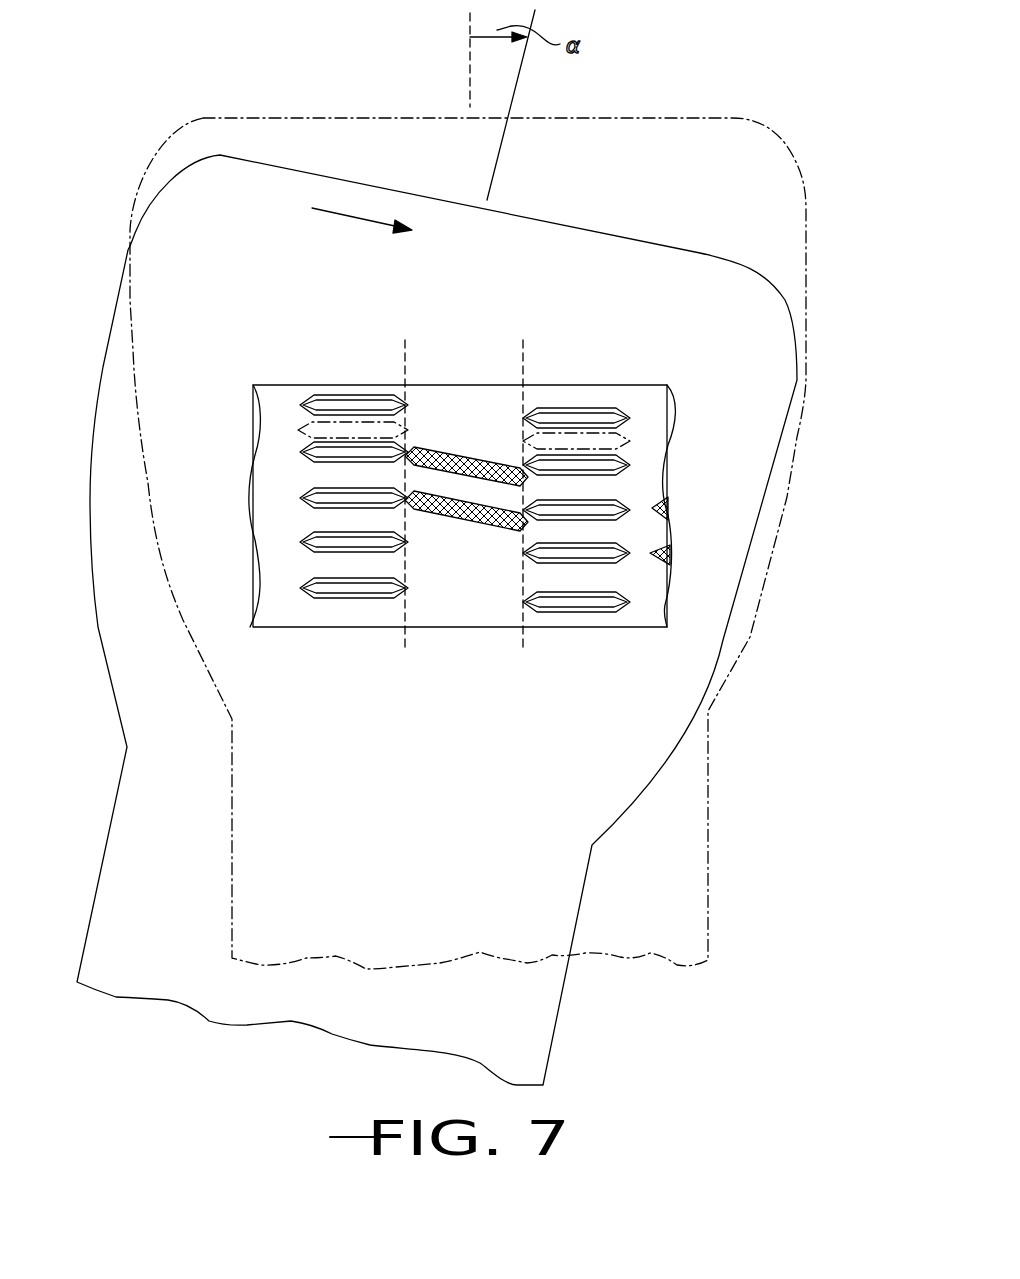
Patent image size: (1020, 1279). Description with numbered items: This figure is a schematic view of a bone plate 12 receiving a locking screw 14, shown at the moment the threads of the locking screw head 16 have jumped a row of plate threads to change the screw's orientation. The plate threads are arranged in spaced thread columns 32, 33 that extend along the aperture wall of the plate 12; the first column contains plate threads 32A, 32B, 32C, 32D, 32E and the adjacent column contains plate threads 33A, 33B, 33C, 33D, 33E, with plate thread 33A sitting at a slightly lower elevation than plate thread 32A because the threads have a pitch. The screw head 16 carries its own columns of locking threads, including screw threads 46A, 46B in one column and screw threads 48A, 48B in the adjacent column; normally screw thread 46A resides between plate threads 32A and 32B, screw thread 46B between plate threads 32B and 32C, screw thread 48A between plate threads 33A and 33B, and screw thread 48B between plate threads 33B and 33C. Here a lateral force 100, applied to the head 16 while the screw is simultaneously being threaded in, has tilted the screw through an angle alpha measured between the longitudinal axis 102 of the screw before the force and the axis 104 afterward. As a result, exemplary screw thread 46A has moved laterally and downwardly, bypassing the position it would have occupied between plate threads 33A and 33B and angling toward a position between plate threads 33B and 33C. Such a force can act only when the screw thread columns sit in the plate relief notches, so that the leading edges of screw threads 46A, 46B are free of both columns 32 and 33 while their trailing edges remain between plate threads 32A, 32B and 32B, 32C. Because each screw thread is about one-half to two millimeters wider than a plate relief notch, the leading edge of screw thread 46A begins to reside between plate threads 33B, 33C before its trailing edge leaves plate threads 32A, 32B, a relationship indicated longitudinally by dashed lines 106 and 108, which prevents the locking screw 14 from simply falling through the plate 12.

The bone plate 12 is at (468, 597).
The locking screw 14 is at (600, 232).
The locking screw head 16 is at (758, 165).
The thread column 32 is at (282, 474).
The bone plate thread 32A is at (323, 400).
The bone plate thread 32B is at (307, 450).
The bone plate thread 32C is at (305, 495).
The fourth blade of first row 32D is at (302, 545).
The fifth blade of first row 32E is at (332, 598).
The thread column 33 is at (633, 487).
The bone plate thread 33A is at (605, 410).
The bone plate thread 33B is at (607, 456).
The bone plate thread 33C is at (620, 518).
The fourth blade of second row 33D is at (612, 560).
The fifth blade of second row 33E is at (590, 607).
The screw thread 46A is at (293, 417).
The screw thread 46B is at (452, 520).
The screw thread 48A is at (660, 500).
The screw thread 48B is at (672, 553).
The lateral force 100 is at (345, 215).
The longitudinal axis of the screw prior to the lateral force 102 is at (468, 63).
The axis after the lateral force 104 is at (539, 100).
The dashed line 106 is at (405, 345).
The dashed line 108 is at (522, 347).